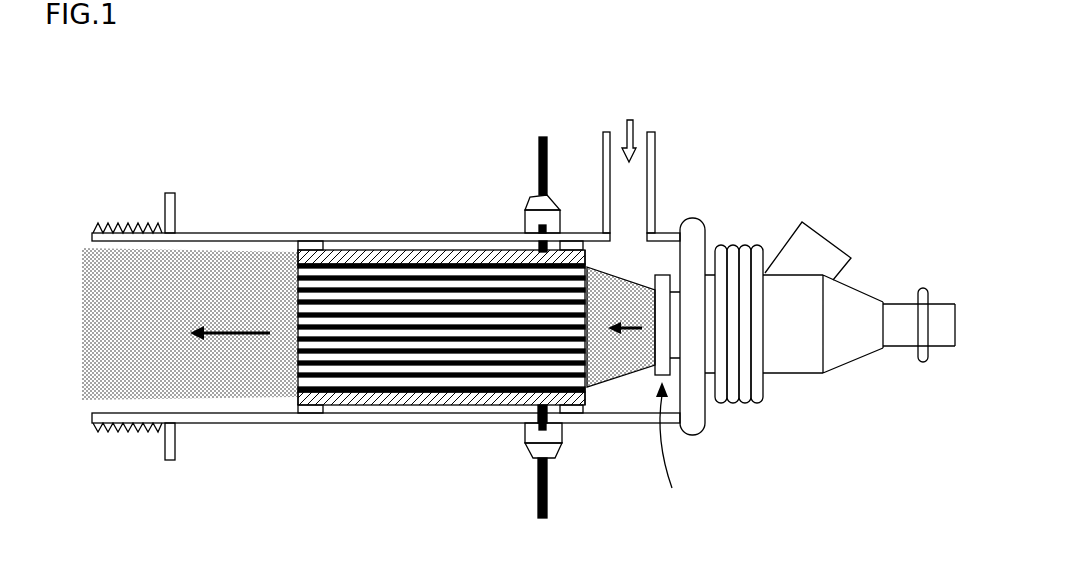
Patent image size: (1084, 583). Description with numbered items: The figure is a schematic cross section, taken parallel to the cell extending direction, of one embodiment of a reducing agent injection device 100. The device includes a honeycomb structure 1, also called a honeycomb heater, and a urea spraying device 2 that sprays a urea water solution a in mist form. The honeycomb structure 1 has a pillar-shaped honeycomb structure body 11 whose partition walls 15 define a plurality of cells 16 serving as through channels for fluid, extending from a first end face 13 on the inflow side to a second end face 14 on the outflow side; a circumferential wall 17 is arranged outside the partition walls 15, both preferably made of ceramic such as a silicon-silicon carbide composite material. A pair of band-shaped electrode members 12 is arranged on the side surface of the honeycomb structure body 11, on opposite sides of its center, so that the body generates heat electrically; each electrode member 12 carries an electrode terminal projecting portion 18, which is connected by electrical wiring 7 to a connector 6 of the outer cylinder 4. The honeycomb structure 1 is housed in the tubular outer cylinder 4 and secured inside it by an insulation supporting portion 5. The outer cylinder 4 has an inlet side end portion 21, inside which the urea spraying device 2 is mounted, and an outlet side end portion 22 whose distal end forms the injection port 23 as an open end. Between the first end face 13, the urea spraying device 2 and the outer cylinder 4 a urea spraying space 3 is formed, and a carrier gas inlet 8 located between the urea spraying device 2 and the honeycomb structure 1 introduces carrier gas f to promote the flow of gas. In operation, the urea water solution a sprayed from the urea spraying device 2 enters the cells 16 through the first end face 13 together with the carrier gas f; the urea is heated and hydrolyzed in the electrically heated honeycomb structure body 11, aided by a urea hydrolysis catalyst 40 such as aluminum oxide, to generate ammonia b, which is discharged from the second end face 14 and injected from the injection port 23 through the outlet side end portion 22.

The reducing agent injection device 100 is at (730, 51).
The honeycomb structure 1 is at (435, 319).
The urea spraying device 2 is at (672, 448).
The urea spraying space 3 is at (633, 388).
The outer cylinder 4 is at (404, 226).
The insulation supporting portion 5 is at (308, 240).
The connector 6 is at (551, 307).
The electrical wiring 7 is at (548, 148).
The carrier gas inlet 8 is at (630, 170).
The honeycomb structure body 11 is at (590, 362).
The electrode member 12 is at (514, 250).
The first end face 13 is at (572, 347).
The second end face 14 is at (295, 277).
The partition wall 15 is at (503, 282).
The cell 16 is at (500, 357).
The circumferential wall 17 is at (505, 395).
The electrode terminal projecting portion 18 is at (548, 220).
The inlet side end portion 21 is at (670, 238).
The outlet side end portion 22 is at (98, 222).
The injection port 23 is at (103, 405).
The urea hydrolysis catalyst 40 is at (435, 341).
The urea water solution a is at (635, 312).
The ammonia b is at (228, 336).
The carrier gas f is at (633, 128).